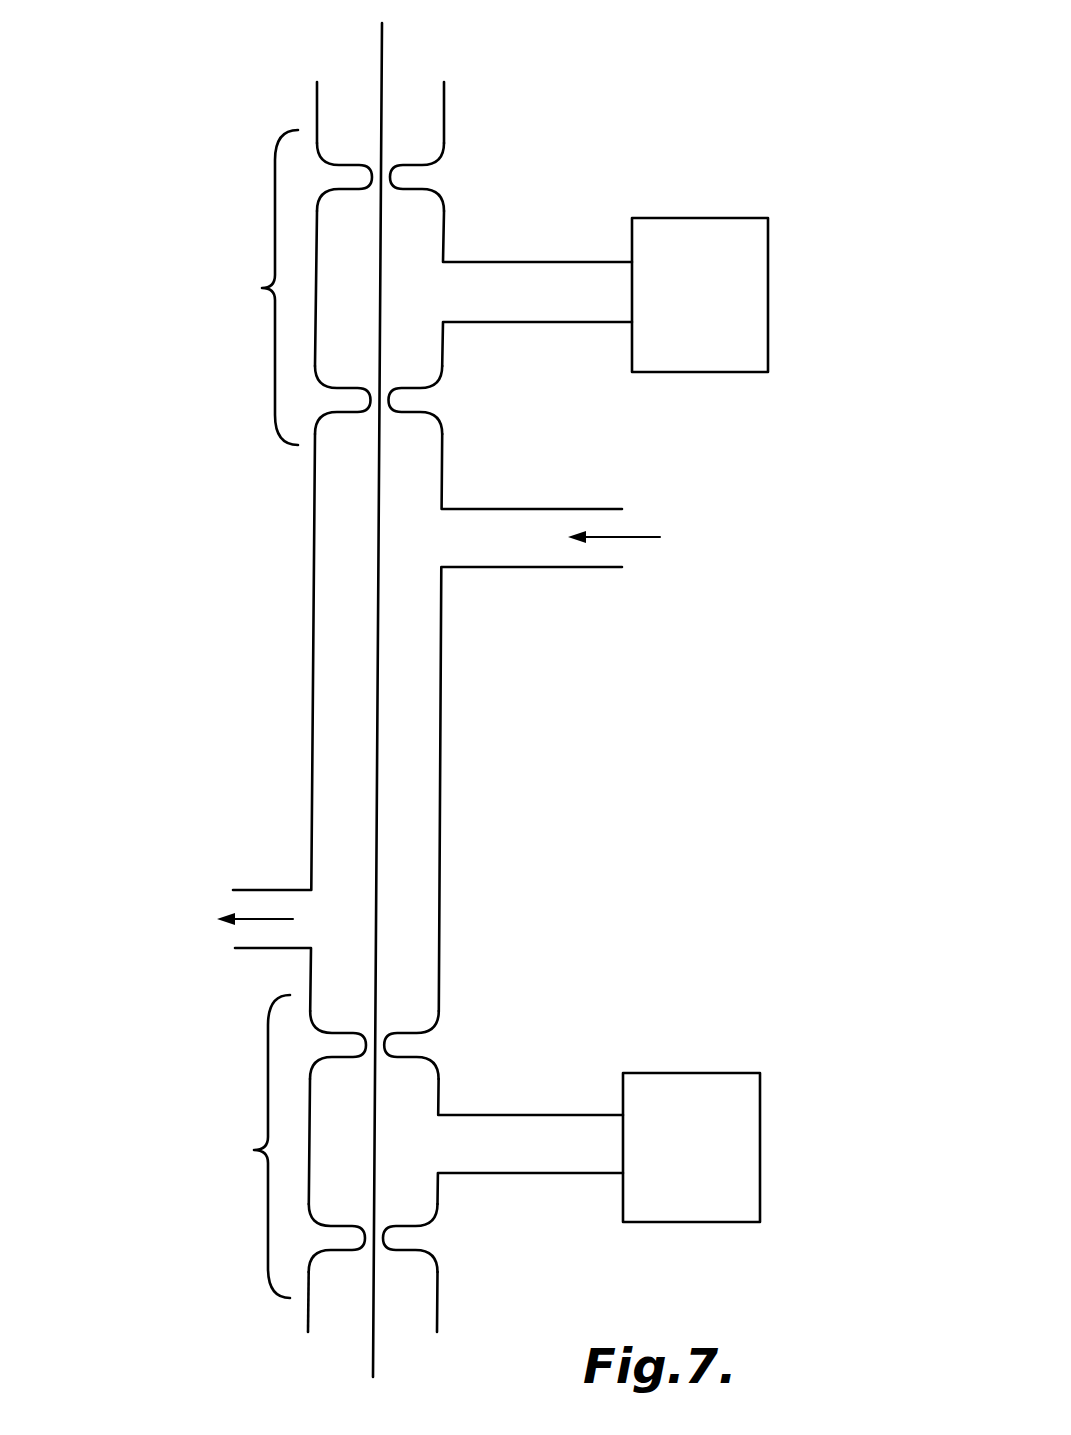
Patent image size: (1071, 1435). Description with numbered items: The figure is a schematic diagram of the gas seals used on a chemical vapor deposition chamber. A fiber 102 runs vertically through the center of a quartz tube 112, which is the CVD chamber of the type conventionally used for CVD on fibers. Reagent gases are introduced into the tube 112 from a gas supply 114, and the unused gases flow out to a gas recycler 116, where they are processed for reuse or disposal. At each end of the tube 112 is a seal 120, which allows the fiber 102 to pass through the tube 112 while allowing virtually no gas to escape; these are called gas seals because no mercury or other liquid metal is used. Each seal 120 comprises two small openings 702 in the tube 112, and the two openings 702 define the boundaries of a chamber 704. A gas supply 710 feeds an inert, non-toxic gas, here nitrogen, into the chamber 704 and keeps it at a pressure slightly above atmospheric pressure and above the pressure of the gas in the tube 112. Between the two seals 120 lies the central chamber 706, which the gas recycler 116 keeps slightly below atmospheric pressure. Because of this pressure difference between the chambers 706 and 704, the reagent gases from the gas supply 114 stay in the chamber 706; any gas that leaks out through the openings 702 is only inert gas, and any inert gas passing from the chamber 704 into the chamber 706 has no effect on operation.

The fiber 102 is at (382, 42).
The quartz tube 112 is at (440, 757).
The gas supply 114 is at (677, 539).
The gas recycler 116 is at (190, 935).
The seals 120 is at (245, 714).
The openings 702 is at (386, 185).
The chamber 704 is at (417, 338).
The chamber 706 is at (430, 897).
The gas supply 710 is at (732, 218).